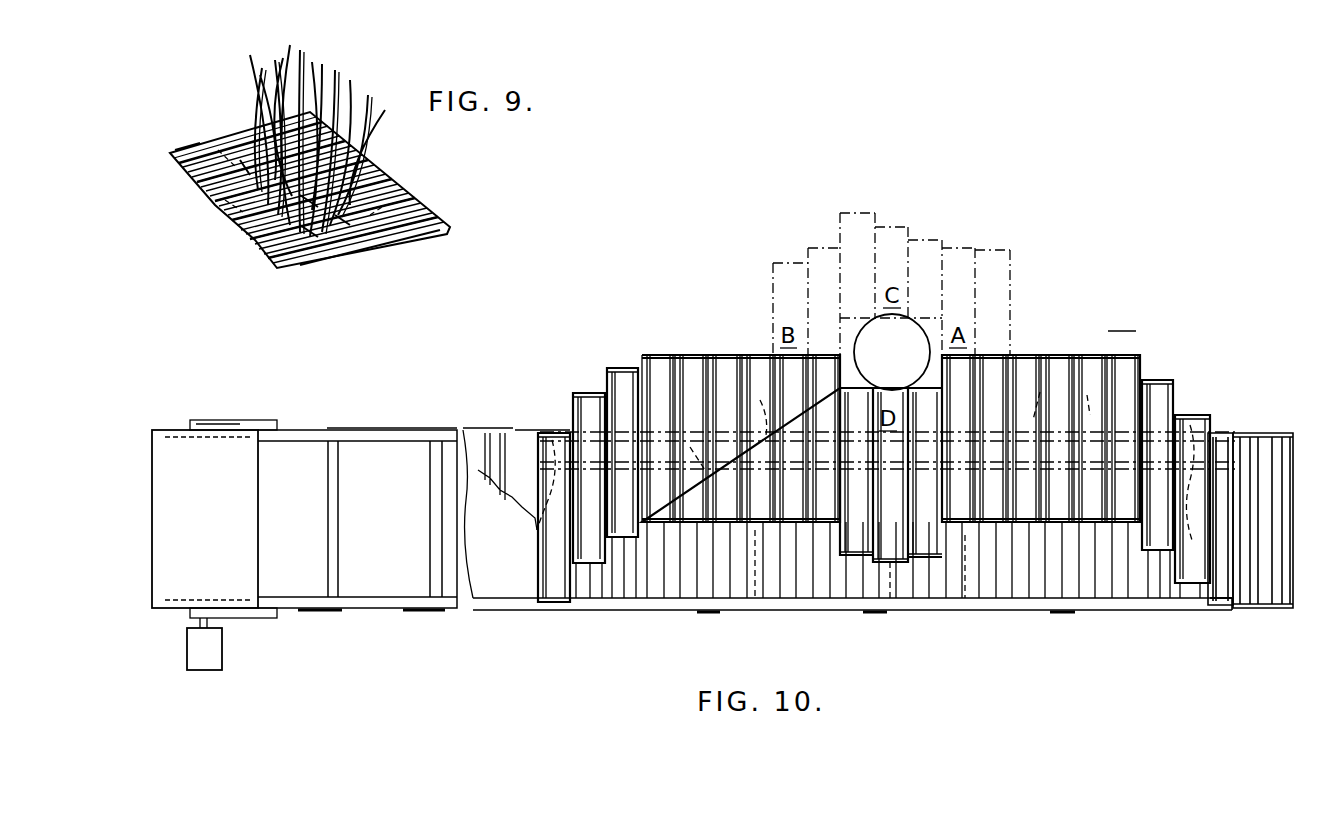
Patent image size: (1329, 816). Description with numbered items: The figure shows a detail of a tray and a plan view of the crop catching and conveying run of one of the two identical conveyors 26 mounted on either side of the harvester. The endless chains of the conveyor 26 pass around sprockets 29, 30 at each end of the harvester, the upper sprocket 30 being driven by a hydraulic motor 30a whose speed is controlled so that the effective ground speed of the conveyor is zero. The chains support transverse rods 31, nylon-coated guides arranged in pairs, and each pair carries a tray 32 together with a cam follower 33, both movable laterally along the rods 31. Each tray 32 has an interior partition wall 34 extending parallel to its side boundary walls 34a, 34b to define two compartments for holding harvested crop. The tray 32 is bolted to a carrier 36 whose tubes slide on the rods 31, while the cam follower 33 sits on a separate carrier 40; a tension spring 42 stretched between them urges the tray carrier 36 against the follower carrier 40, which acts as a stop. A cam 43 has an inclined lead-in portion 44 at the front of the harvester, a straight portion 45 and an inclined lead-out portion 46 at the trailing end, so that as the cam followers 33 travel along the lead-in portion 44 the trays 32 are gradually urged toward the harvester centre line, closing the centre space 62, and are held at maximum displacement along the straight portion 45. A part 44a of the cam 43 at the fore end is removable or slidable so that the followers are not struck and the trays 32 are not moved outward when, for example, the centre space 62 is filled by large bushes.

In FIG. 9, the conveyor 26 is at (266, 282).
In FIG. 10, the conveyor 26 is at (1020, 298).
In FIG. 10, the sprocket 29 is at (1248, 618).
In FIG. 10, the driven sprocket 30 is at (200, 430).
In FIG. 10, the hydraulic motor 30a is at (222, 645).
In FIG. 10, the transverse rod 31 is at (677, 582).
In FIG. 9, the tray 32 is at (207, 207).
In FIG. 10, the tray 32 is at (918, 250).
In FIG. 10, the cam follower 33 is at (690, 447).
In FIG. 9, the interior partition wall 34 is at (183, 163).
In FIG. 10, the interior partition wall 34 is at (662, 372).
In FIG. 9, the side boundary wall 34a is at (205, 150).
In FIG. 9, the side boundary wall 34b is at (337, 264).
In FIG. 10, the carrier 36 is at (735, 565).
In FIG. 10, the carrier 40 is at (768, 357).
In FIG. 10, the tension spring 42 is at (757, 606).
In FIG. 10, the cam 43 is at (1170, 425).
In FIG. 10, the inclined lead-in portion 44 is at (1218, 431).
In FIG. 10, the removable cam part 44a is at (1172, 598).
In FIG. 10, the straight portion 45 is at (965, 594).
In FIG. 10, the inclined lead-out portion 46 is at (548, 429).
In FIG. 10, the centre space 62 is at (1122, 318).